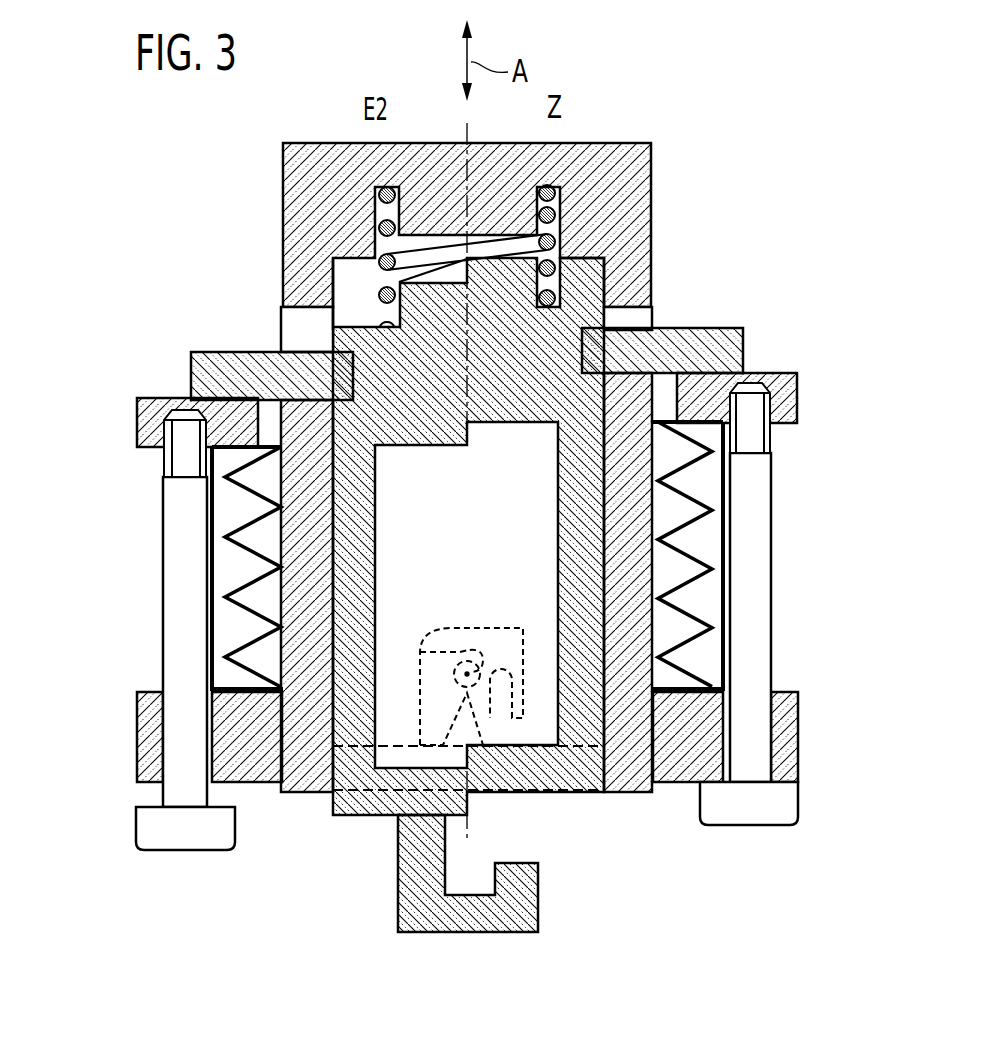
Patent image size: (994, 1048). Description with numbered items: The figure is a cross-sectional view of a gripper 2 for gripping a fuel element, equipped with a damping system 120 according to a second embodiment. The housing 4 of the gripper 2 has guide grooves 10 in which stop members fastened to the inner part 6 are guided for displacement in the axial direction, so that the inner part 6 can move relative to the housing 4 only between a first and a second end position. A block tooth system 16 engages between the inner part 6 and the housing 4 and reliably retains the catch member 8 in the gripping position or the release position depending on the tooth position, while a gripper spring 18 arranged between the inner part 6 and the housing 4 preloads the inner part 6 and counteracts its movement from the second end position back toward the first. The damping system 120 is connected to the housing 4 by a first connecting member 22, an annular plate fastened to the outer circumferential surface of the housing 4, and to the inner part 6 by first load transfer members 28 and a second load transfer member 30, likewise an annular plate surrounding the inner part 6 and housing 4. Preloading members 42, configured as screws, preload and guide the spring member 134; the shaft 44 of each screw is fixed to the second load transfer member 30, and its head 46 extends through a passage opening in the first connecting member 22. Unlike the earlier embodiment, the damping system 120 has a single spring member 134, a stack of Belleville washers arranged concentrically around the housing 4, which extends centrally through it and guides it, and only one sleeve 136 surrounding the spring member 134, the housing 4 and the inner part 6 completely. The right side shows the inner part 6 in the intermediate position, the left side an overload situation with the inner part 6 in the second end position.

The gripper 2 is at (813, 106).
The housing 4 is at (640, 190).
The inner part 6 is at (582, 776).
The catch member 8 is at (410, 885).
The guide grooves 10 is at (293, 333).
The block tooth system 16 is at (493, 634).
The gripper spring 18 is at (557, 213).
The first connecting member 22 is at (249, 774).
The first load transfer members 28 is at (212, 358).
The second load transfer member 30 is at (160, 407).
The preloading member 42 is at (170, 586).
The shaft 44 is at (182, 452).
The head 46 is at (188, 842).
The damping system 120 is at (118, 428).
The spring member 134 is at (238, 497).
The sleeve 136 is at (212, 656).